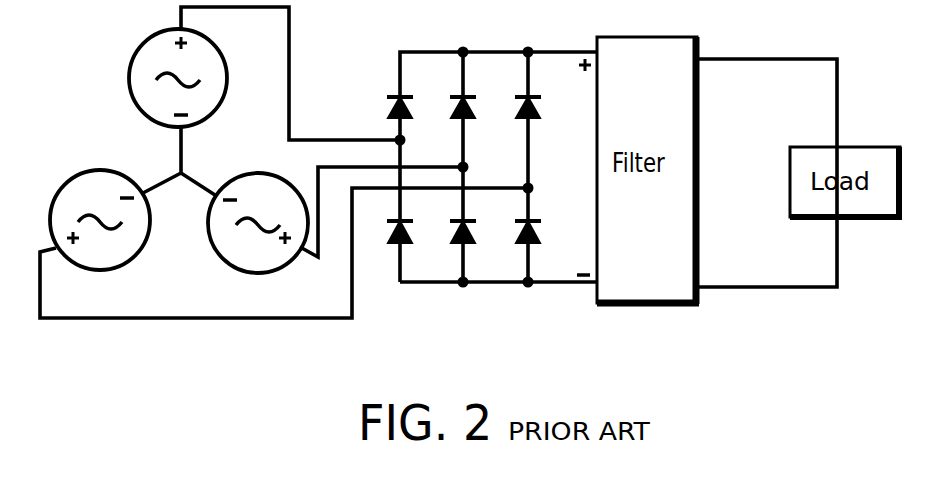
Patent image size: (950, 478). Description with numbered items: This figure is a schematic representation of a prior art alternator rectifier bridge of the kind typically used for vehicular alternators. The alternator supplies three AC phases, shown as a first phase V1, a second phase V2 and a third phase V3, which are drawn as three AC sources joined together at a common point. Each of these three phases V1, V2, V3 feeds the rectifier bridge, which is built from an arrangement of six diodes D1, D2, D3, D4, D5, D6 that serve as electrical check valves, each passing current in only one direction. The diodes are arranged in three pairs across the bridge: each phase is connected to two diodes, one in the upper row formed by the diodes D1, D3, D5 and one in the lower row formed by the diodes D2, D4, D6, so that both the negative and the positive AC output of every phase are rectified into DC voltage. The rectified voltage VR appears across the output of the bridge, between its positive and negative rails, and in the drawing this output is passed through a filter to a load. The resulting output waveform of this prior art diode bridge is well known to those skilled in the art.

The first phase V1 is at (155, 78).
The second phase V2 is at (256, 241).
The third phase V3 is at (104, 239).
The diode D1 is at (385, 90).
The diode D2 is at (412, 217).
The diode D3 is at (475, 90).
The diode D4 is at (475, 217).
The diode D5 is at (543, 90).
The diode D6 is at (540, 217).
The rectified output voltage VR is at (574, 167).